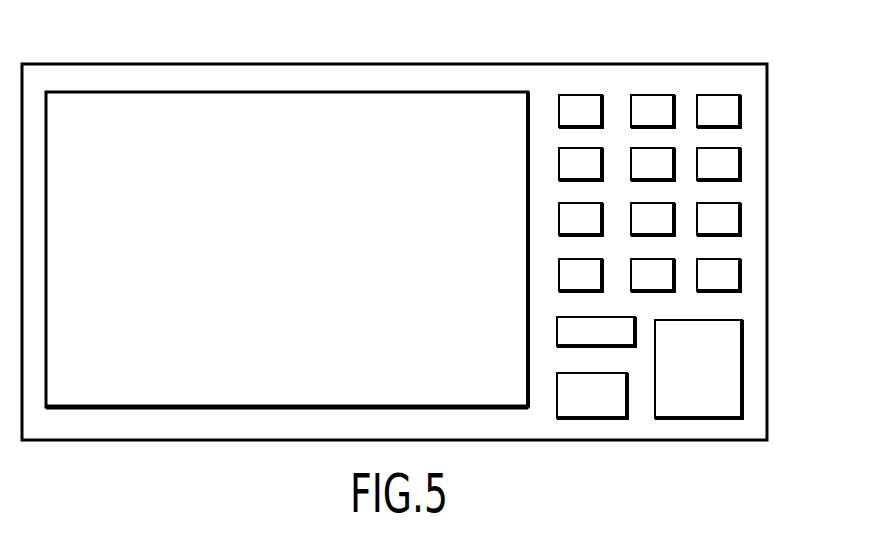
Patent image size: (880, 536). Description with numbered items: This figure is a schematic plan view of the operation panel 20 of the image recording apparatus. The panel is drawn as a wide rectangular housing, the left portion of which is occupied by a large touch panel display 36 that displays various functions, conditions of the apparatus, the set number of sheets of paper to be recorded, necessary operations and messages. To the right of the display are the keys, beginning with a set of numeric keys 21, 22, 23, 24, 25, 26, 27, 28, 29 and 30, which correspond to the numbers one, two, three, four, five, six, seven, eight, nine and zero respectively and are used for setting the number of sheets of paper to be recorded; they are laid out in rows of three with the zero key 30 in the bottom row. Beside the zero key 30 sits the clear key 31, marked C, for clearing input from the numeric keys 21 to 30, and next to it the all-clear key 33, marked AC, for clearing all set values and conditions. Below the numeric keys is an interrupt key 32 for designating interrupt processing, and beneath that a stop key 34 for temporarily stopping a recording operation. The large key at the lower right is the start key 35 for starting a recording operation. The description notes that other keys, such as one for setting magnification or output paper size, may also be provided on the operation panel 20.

The operation panel 20 is at (70, 442).
The numeric key 21 is at (563, 95).
The numeric key 22 is at (652, 95).
The numeric key 23 is at (730, 95).
The numeric key 24 is at (559, 165).
The numeric key 25 is at (643, 148).
The numeric key 26 is at (740, 153).
The numeric key 27 is at (559, 219).
The numeric key 28 is at (643, 203).
The numeric key 29 is at (740, 210).
The numeric key 30 is at (559, 279).
The clear key 31 is at (643, 259).
The interrupt key 32 is at (557, 330).
The all-clear key 33 is at (740, 270).
The stop key 34 is at (583, 420).
The start key 35 is at (688, 420).
The touch panel display 36 is at (200, 408).